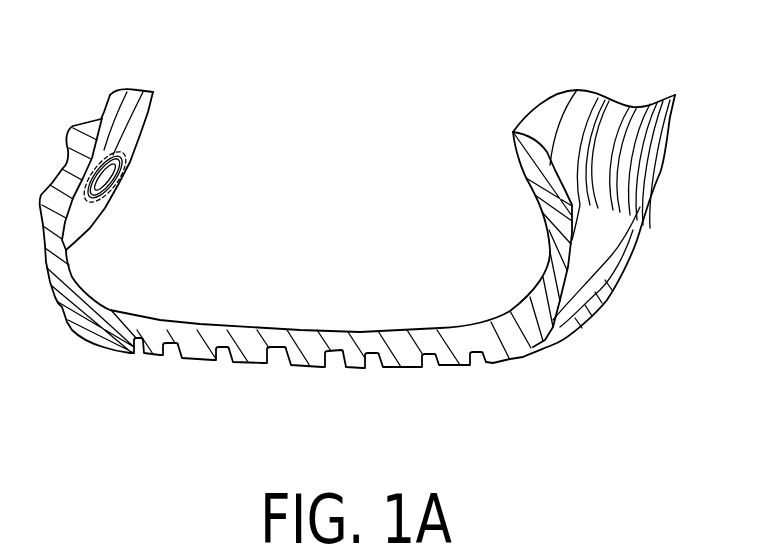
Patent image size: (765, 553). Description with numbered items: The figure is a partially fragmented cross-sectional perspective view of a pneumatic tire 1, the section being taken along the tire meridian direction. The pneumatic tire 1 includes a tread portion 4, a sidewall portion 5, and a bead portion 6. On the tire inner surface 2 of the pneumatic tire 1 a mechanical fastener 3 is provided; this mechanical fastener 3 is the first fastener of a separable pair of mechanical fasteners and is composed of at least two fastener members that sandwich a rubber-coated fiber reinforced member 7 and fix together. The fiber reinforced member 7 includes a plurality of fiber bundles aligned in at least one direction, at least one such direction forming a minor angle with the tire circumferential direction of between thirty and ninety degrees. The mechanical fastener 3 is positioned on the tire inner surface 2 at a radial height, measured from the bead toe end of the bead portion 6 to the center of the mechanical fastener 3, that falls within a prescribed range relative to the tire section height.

The pneumatic tire 1 is at (128, 352).
The tire inner surface 2 is at (270, 157).
The mechanical fastener 3 is at (118, 167).
The tread portion 4 is at (387, 368).
The sidewall portion 5 is at (557, 268).
The bead portion 6 is at (543, 167).
The fiber reinforced member 7 is at (97, 208).